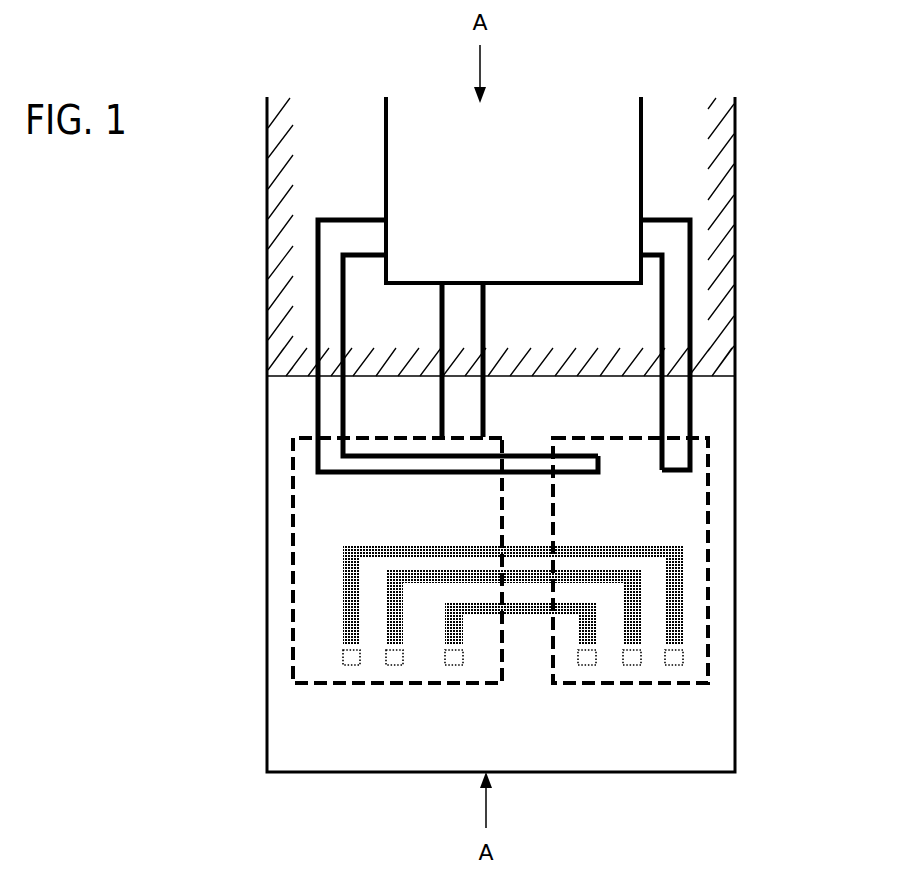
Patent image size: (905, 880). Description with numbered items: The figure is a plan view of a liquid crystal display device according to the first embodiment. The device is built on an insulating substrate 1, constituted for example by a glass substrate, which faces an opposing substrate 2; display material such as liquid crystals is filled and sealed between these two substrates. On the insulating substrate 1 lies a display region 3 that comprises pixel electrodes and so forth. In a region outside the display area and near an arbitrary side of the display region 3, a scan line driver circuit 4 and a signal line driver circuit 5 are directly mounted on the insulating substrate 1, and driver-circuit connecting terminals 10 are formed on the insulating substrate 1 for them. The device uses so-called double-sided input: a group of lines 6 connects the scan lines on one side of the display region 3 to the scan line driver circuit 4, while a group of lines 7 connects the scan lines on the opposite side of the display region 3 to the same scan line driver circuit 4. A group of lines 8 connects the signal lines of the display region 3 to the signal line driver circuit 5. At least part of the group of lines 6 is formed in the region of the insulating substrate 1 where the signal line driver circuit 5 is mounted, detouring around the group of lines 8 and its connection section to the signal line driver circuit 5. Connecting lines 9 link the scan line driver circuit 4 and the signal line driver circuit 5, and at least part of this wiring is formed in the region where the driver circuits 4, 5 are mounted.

The insulating substrate 1 is at (737, 467).
The opposing substrate 2 is at (697, 200).
The display region 3 is at (641, 173).
The scan line driver circuit 4 is at (692, 517).
The signal line driver circuit 5 is at (307, 527).
The group of lines 6 is at (335, 407).
The group of lines 7 is at (670, 308).
The group of lines 8 is at (458, 343).
The connecting lines 9 is at (590, 637).
The driver-circuit connecting terminals 10 is at (675, 658).